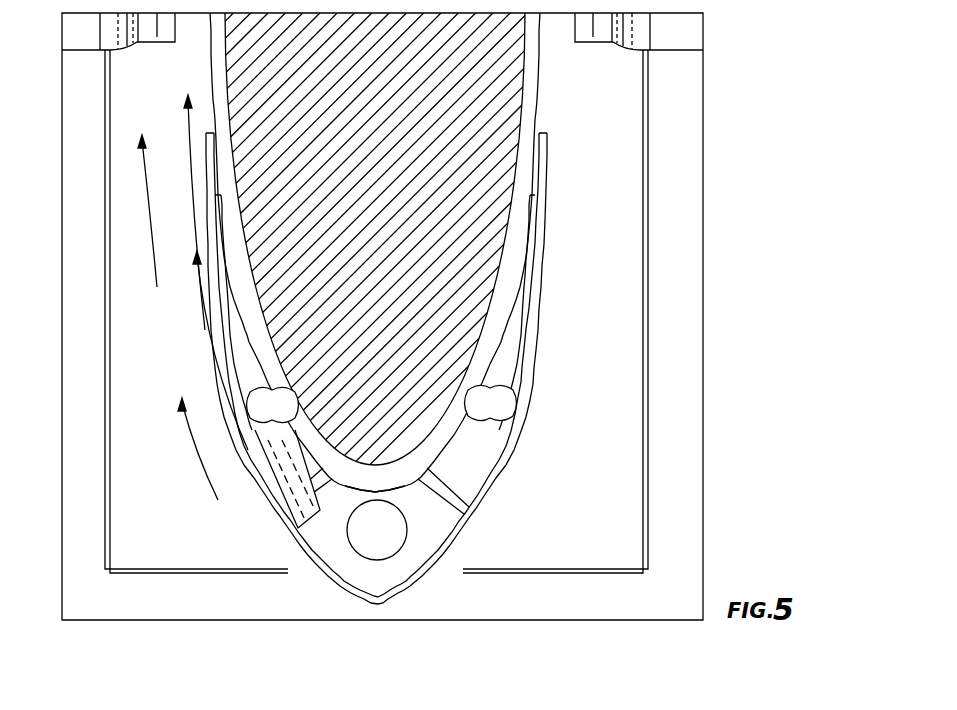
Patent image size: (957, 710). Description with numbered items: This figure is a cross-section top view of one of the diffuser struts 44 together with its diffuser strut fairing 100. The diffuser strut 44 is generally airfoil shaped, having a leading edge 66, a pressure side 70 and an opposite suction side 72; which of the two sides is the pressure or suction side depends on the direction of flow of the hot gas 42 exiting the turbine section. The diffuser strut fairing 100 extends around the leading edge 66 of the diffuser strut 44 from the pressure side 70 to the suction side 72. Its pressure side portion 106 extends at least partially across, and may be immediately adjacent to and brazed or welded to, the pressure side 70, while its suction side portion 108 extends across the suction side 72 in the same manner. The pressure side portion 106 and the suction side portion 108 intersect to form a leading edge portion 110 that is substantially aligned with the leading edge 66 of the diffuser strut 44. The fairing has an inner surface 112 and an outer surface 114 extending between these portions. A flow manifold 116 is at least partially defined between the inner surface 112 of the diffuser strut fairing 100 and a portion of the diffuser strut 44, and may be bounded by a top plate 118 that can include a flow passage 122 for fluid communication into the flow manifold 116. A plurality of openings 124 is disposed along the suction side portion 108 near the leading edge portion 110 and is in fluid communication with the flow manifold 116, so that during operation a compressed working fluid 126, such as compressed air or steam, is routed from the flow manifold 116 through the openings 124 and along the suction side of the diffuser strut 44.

The hot gas 42 is at (148, 208).
The diffuser strut 44 is at (390, 272).
The leading edge 66 is at (374, 486).
The pressure side 70 is at (539, 106).
The suction side 72 is at (211, 73).
The diffuser strut fairing 100 is at (528, 479).
The pressure side portion 106 is at (529, 361).
The suction side portion 108 is at (244, 233).
The leading edge portion 110 is at (371, 603).
The inner surface 112 is at (413, 581).
The outer surface 114 is at (432, 580).
The flow manifold 116 is at (290, 418).
The top plate 118 is at (322, 567).
The flow passage 122 is at (408, 516).
The openings 124 is at (273, 506).
The compressed working fluid 126 is at (189, 146).